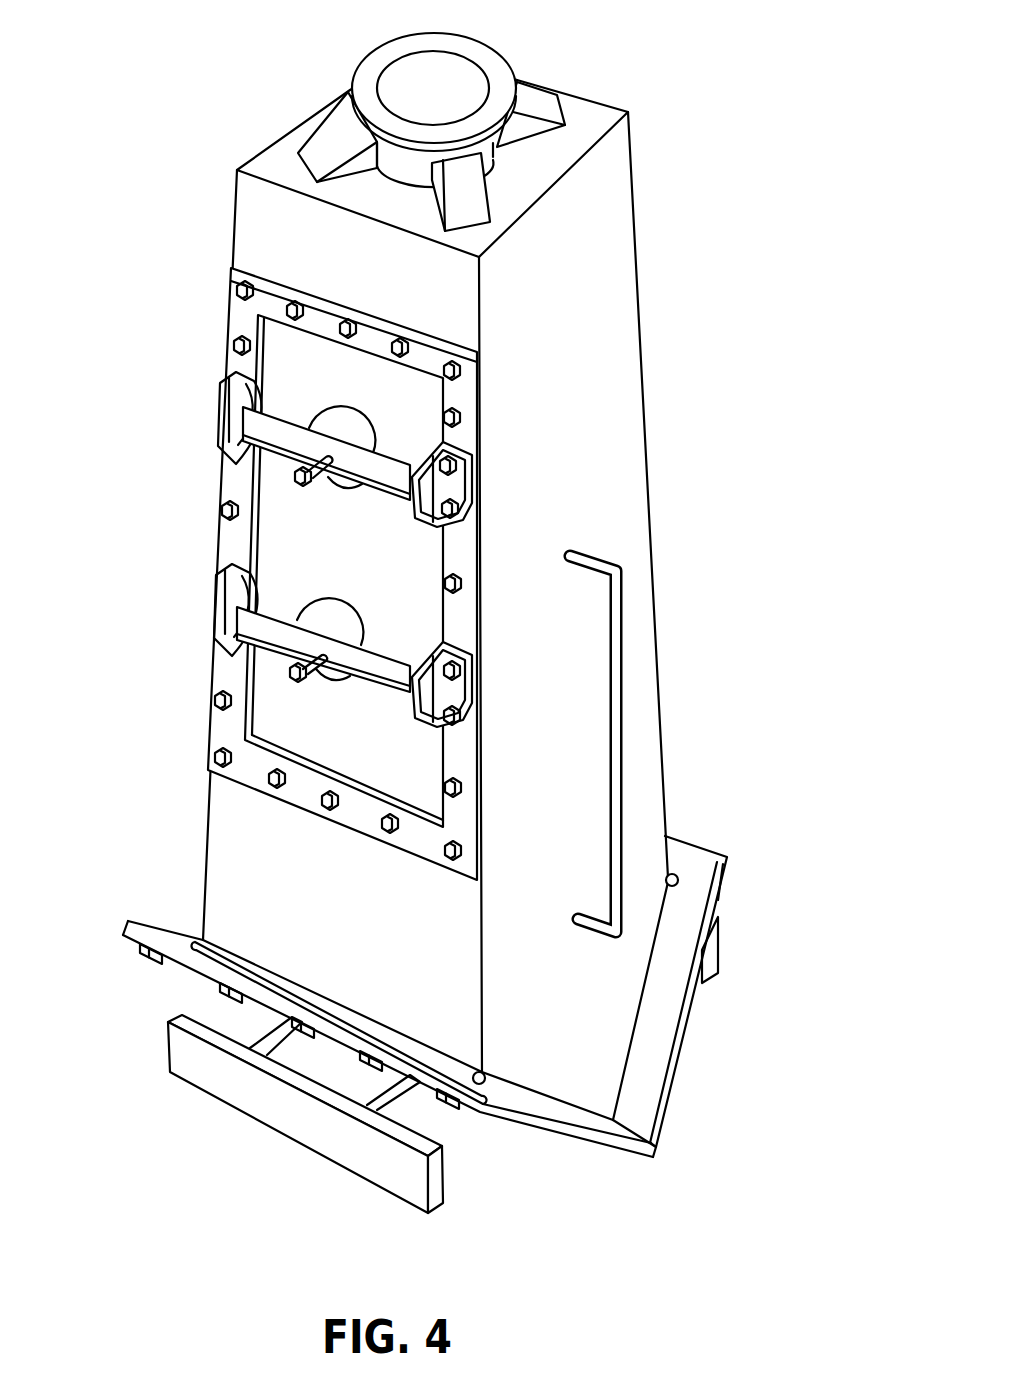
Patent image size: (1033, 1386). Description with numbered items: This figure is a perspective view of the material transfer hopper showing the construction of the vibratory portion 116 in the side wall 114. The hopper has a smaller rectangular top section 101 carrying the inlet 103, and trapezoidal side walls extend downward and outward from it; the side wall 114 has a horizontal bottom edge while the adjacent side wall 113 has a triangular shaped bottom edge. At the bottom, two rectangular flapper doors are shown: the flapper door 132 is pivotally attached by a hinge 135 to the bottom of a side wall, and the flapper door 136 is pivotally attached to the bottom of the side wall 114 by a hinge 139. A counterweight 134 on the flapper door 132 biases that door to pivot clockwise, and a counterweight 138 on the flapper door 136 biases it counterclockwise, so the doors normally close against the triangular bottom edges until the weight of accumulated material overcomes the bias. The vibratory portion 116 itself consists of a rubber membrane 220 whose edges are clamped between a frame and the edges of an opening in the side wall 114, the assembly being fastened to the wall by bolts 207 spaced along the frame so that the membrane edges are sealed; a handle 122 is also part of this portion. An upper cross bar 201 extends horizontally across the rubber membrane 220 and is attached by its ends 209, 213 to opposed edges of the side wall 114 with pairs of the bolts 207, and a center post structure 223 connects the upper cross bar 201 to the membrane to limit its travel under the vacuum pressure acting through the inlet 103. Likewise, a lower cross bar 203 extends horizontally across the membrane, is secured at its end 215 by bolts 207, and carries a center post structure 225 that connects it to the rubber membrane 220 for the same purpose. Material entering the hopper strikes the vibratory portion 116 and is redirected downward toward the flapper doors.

The top section 101 is at (597, 110).
The inlet 103 is at (415, 78).
The side wall 113 is at (632, 303).
The side wall 114 is at (222, 840).
The vibratory portion 116 is at (272, 333).
The handle 122 is at (628, 614).
The flapper door 132 is at (703, 862).
The counterweight 134 is at (720, 935).
The hinge 135 is at (674, 874).
The flapper door 136 is at (637, 1157).
The counterweight 138 is at (437, 1190).
The hinge 139 is at (486, 1077).
The upper cross bar 201 is at (384, 482).
The lower cross bar 203 is at (382, 688).
The bolts 207 is at (470, 492).
The end 209 is at (222, 400).
The end 213 is at (426, 452).
The end 215 is at (410, 734).
The rubber membrane 220 is at (322, 565).
The center post structure 223 is at (318, 416).
The center post structure 225 is at (331, 604).